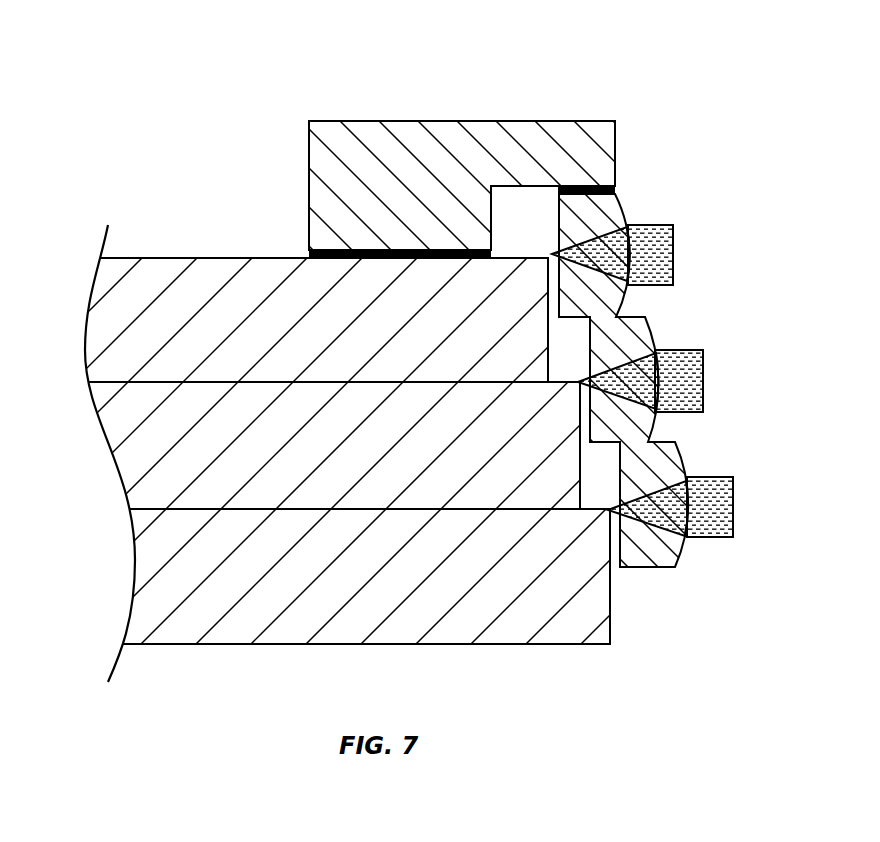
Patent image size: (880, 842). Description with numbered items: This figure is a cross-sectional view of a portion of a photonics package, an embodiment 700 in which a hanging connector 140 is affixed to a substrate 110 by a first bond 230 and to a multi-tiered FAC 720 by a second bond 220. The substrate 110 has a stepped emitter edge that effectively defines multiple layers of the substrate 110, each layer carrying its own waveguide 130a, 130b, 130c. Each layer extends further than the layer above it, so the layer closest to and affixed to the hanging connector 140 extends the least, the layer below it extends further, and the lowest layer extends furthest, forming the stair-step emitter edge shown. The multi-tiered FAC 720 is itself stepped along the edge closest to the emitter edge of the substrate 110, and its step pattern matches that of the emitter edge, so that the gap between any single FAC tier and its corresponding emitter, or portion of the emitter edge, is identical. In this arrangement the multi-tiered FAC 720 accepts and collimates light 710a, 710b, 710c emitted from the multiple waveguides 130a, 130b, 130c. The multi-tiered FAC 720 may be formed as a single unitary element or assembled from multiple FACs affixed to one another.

The embodiment 700 is at (198, 66).
The substrate 110 is at (336, 645).
The waveguide 130a is at (99, 258).
The waveguide 130b is at (88, 382).
The waveguide 130c is at (129, 509).
The hanging connector 140 is at (463, 121).
The second bond 220 is at (615, 186).
The first bond 230 is at (325, 250).
The multi-tiered FAC 720 is at (620, 202).
The light 710a is at (673, 254).
The light 710b is at (703, 380).
The light 710c is at (733, 507).